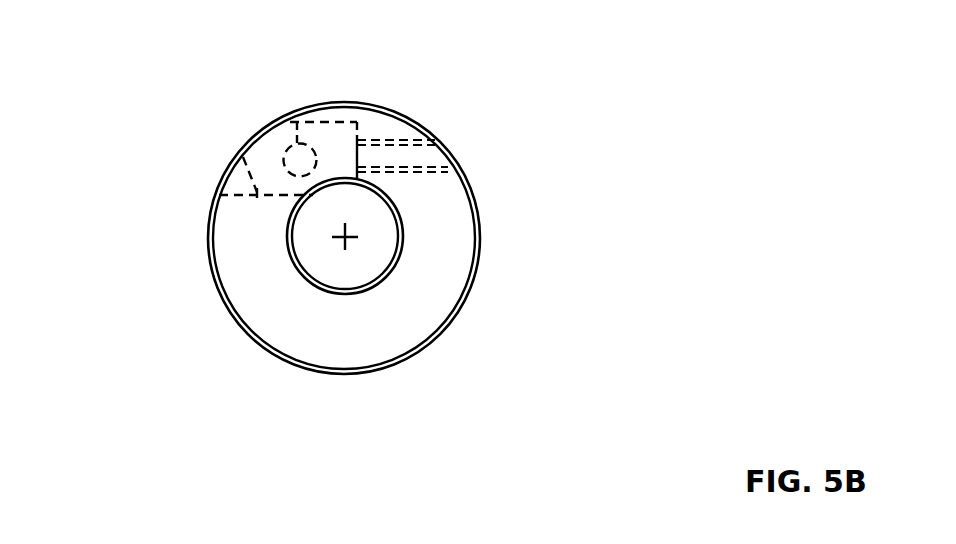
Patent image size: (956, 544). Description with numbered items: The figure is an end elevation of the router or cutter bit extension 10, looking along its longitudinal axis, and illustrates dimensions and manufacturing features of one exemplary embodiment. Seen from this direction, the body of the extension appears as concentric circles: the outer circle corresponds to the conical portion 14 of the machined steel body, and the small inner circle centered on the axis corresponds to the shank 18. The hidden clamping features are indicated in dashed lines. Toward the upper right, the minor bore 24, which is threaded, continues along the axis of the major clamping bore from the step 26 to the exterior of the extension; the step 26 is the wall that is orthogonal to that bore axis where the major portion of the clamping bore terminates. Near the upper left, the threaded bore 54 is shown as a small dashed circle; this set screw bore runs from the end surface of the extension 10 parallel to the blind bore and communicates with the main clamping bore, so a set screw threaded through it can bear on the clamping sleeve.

The router or cutter bit extension 10 is at (168, 238).
The conical portion 14 is at (250, 263).
The shank 18 is at (305, 273).
The minor bore 24 is at (397, 142).
The step 26 is at (243, 157).
The threaded bore 54 is at (292, 124).